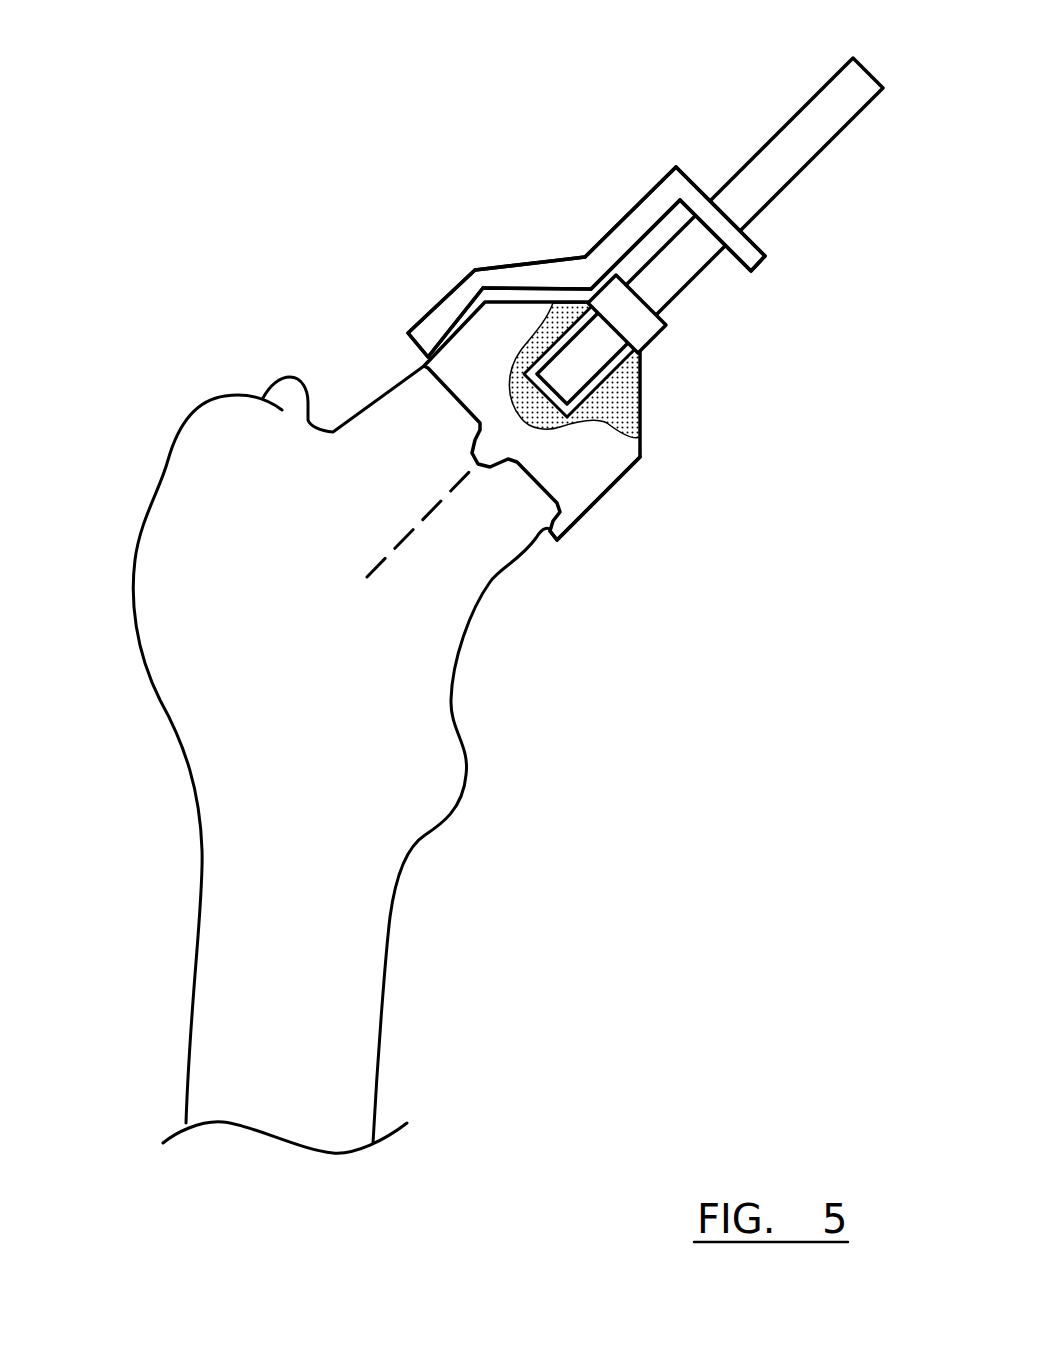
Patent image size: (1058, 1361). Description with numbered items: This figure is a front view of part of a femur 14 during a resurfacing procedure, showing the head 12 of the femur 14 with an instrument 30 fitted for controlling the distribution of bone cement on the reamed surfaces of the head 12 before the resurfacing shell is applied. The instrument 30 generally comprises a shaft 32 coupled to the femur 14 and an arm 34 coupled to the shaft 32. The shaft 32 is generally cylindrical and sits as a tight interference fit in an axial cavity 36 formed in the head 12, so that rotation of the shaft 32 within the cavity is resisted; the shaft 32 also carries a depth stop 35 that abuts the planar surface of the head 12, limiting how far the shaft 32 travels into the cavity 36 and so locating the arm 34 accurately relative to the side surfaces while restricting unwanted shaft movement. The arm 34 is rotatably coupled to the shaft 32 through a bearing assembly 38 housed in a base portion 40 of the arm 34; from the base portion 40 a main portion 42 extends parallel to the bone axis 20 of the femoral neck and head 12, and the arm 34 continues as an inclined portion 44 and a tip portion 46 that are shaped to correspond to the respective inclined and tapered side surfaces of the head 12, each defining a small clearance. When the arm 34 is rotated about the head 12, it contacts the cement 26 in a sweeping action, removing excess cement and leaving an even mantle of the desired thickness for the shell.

The head 12 is at (605, 528).
The femur 14 is at (262, 970).
The axis 20 is at (407, 528).
The cement 26 is at (600, 448).
The instrument 30 is at (615, 214).
The shaft 32 is at (832, 105).
The arm 34 is at (455, 265).
The depth stop 35 is at (645, 328).
The axial cavity 36 is at (640, 388).
The bearing assembly 38 is at (764, 231).
The base portion 40 is at (700, 180).
The main portion 42 is at (633, 200).
The inclined portion 44 is at (525, 262).
The tip portion 46 is at (430, 305).